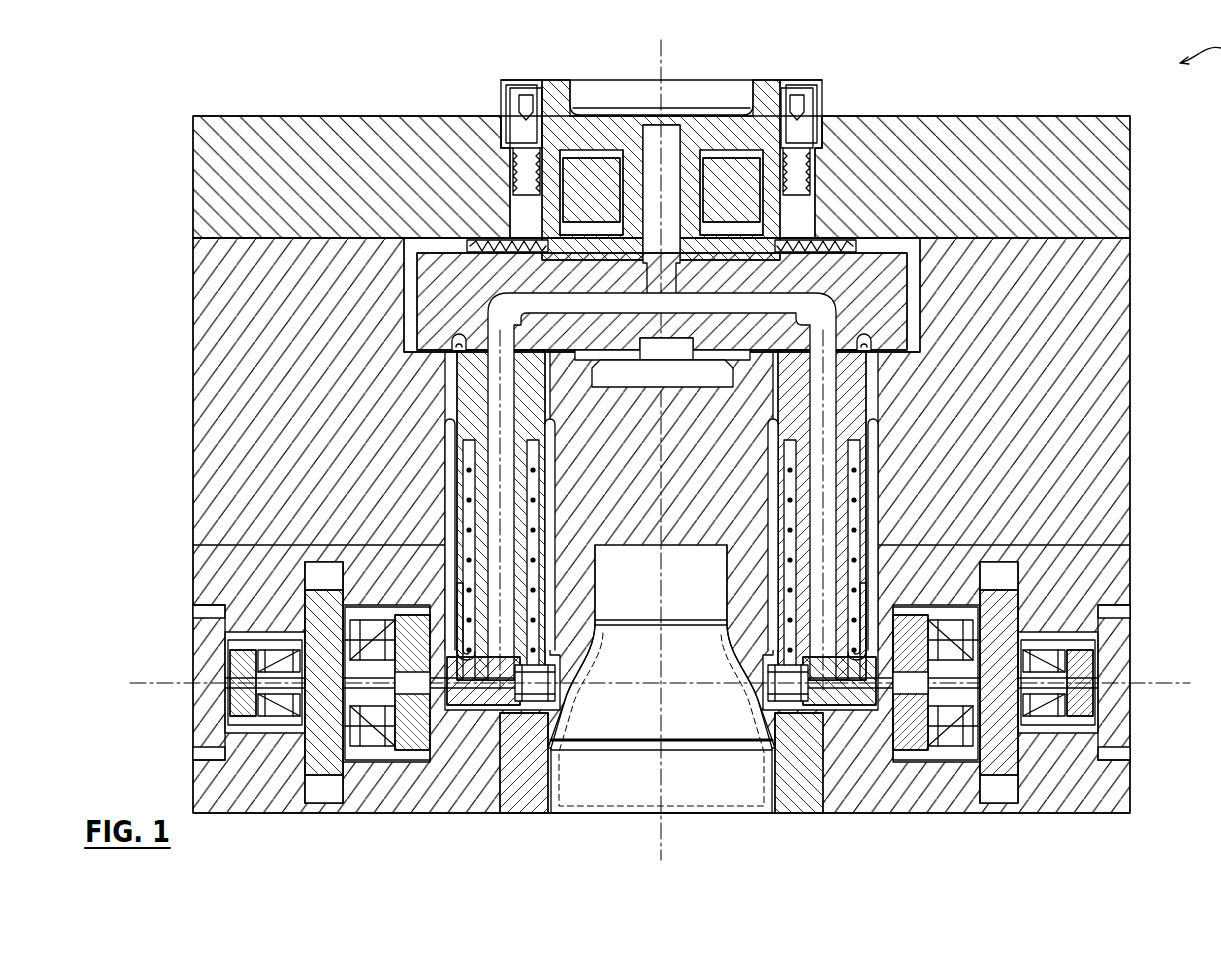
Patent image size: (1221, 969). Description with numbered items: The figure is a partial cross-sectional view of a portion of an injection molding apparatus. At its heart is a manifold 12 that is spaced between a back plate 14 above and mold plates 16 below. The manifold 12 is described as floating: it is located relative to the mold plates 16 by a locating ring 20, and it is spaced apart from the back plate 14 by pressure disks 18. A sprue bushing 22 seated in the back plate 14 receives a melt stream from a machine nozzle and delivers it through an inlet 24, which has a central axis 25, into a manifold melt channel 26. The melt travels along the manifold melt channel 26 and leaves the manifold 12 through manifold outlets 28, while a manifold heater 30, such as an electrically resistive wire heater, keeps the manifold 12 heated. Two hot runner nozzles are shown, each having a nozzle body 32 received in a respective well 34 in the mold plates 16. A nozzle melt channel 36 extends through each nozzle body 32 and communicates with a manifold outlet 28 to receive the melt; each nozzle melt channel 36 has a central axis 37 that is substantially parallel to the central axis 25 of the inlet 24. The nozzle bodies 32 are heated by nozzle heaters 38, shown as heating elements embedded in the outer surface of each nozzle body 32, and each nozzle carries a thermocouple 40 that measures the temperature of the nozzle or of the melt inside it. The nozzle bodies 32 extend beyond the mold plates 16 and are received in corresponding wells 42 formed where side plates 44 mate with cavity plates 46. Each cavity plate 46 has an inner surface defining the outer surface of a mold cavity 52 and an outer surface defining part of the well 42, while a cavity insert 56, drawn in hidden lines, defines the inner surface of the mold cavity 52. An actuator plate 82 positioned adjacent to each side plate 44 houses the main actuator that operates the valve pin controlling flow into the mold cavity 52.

The manifold 12 is at (915, 292).
The back plate 14 is at (1132, 155).
The mold plates 16 is at (192, 403).
The pressure disks 18 is at (492, 240).
The locating ring 20 is at (716, 392).
The sprue bushing 22 is at (781, 70).
The inlet 24 is at (649, 199).
The central axis 25 is at (660, 45).
The manifold melt channel 26 is at (540, 250).
The manifold outlets 28 is at (487, 350).
The manifold heater 30 is at (420, 340).
The nozzle body 32 is at (455, 395).
The wells 34 is at (453, 498).
The nozzle melt channel 36 is at (490, 455).
The central axis 37 is at (496, 400).
The nozzle heaters 38 is at (455, 532).
The thermocouple 40 is at (462, 648).
The wells 42 is at (540, 583).
The side plates 44 is at (410, 790).
The cavity plates 46 is at (518, 790).
The mold cavity 52 is at (556, 813).
The cavity insert 56 is at (687, 812).
The actuator plate 82 is at (262, 795).